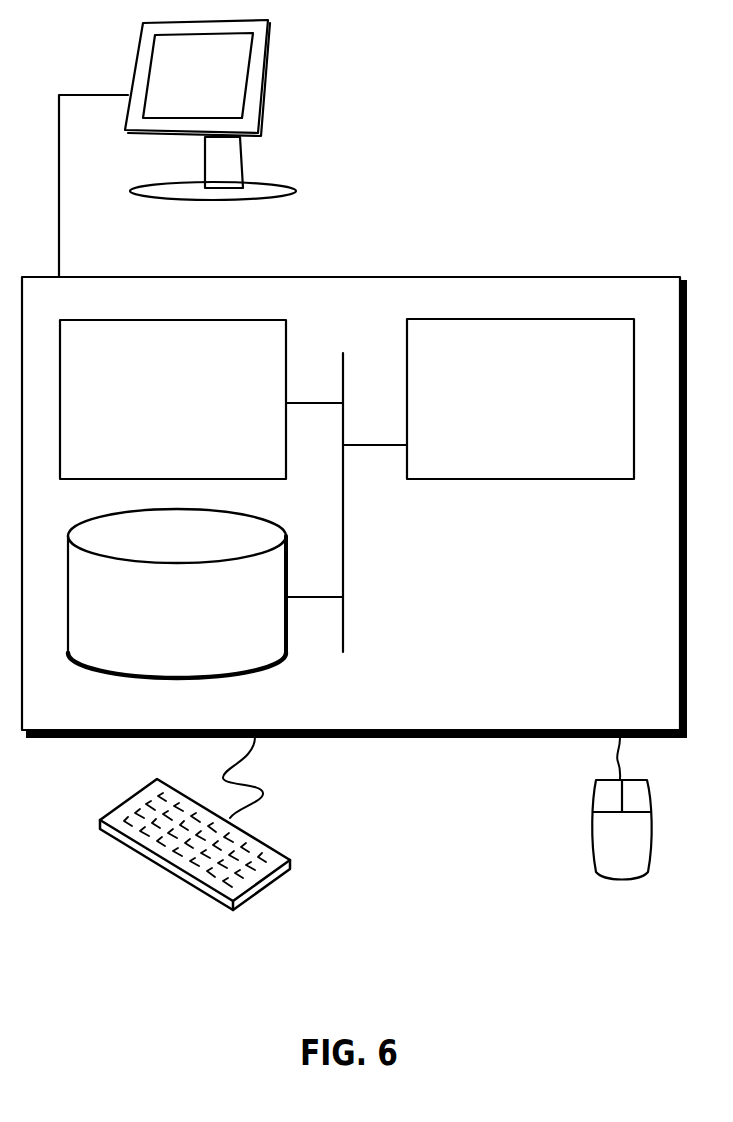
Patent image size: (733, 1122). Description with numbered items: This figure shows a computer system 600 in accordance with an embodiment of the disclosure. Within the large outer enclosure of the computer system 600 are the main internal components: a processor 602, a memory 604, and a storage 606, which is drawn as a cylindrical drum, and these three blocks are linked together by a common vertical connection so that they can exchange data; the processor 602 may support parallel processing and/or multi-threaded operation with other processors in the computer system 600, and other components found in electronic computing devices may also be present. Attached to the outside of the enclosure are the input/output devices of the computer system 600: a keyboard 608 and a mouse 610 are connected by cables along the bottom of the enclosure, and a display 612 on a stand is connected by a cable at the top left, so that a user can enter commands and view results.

The computer system 600 is at (397, 245).
The processor 602 is at (546, 412).
The memory 604 is at (196, 410).
The storage 606 is at (203, 622).
The keyboard 608 is at (122, 842).
The mouse 610 is at (643, 852).
The display 612 is at (177, 148).